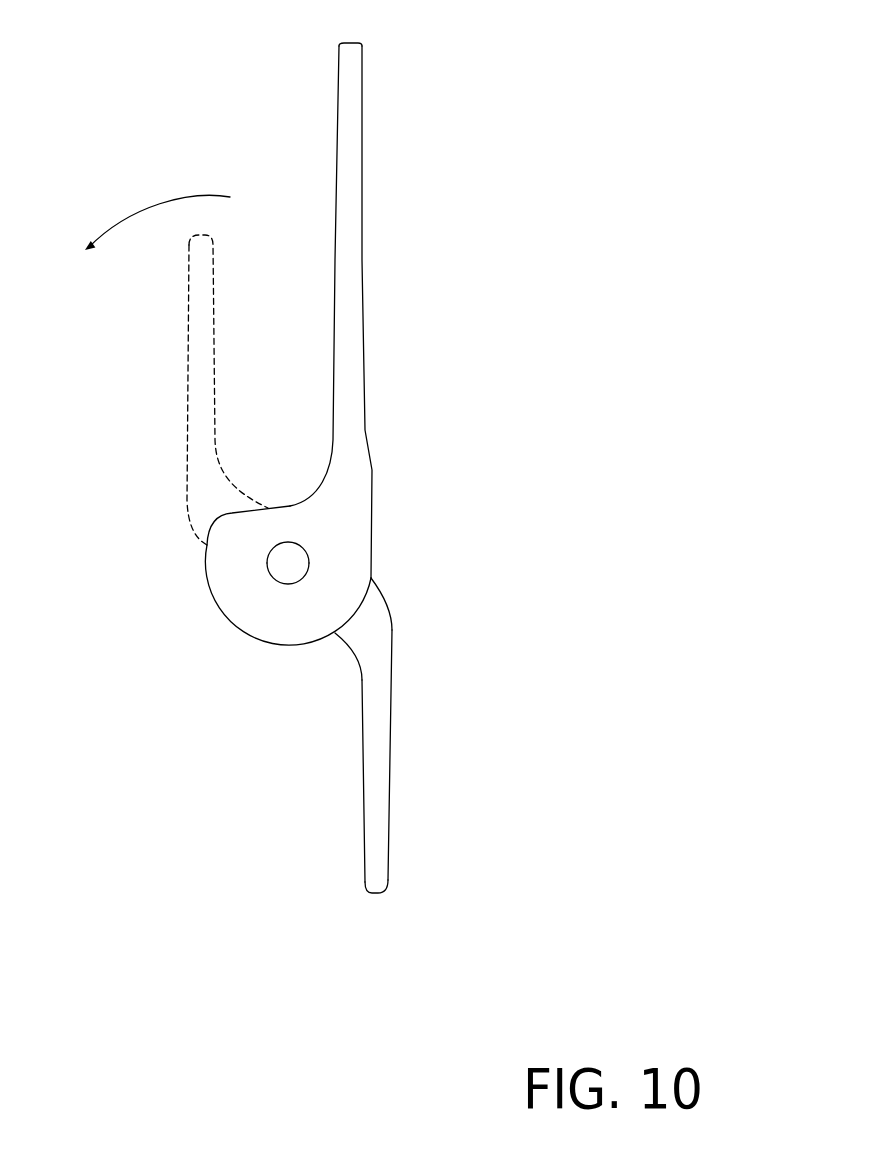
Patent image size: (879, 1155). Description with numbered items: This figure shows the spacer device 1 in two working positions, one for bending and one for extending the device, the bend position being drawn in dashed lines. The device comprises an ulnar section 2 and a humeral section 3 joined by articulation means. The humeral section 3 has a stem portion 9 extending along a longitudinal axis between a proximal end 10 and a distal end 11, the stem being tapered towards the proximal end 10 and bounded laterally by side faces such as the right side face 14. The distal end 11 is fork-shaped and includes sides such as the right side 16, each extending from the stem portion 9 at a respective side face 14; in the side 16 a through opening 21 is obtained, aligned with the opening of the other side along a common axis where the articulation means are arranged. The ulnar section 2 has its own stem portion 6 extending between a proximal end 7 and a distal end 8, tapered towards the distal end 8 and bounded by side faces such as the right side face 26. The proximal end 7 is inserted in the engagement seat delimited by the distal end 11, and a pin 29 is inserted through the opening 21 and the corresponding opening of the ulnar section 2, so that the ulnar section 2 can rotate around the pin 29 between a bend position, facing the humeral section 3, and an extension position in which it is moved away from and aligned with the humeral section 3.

The spacer device 1 is at (545, 125).
The ulnar section 2 is at (412, 722).
The humeral section 3 is at (427, 252).
The stem portion 6 is at (372, 742).
The proximal end 7 is at (378, 620).
The distal end 8 is at (380, 883).
The stem portion 9 is at (350, 210).
The proximal end 10 is at (350, 62).
The distal end 11 is at (394, 521).
The right side face 14 is at (360, 348).
The right side 16 is at (255, 618).
The through opening 21 is at (267, 566).
The right side face 26 is at (377, 807).
The pin 29 is at (288, 560).